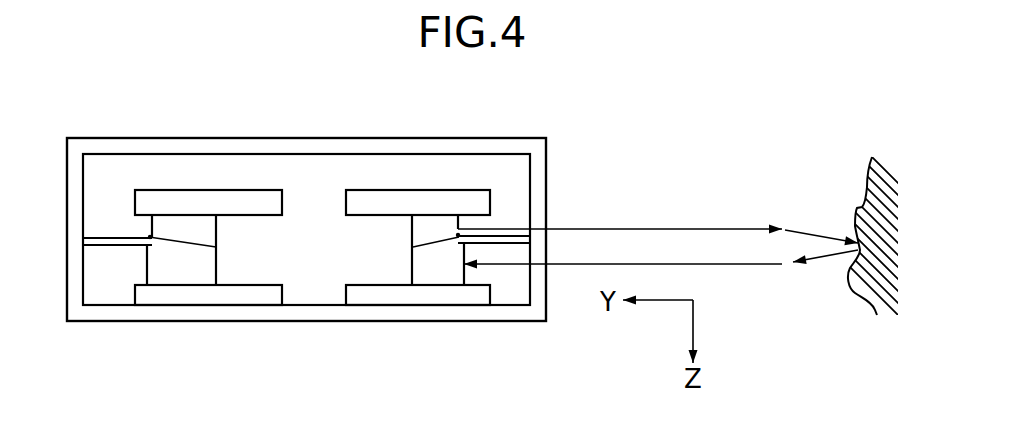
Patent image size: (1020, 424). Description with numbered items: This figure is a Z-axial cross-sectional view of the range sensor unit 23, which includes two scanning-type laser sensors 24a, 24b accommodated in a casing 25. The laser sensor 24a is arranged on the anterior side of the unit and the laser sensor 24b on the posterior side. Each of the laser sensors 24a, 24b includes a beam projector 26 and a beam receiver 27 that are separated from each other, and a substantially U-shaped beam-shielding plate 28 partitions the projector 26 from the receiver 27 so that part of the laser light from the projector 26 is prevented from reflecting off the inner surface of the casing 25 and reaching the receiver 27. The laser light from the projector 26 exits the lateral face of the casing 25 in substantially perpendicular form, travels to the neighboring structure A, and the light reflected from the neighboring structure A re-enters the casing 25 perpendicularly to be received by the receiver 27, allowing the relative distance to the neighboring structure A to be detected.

The range sensor unit 23 is at (557, 158).
The laser sensor 24a is at (198, 190).
The laser sensor 24b is at (412, 190).
The casing 25 is at (313, 147).
The beam projector 26 is at (163, 230).
The beam receiver 27 is at (200, 270).
The beam-shielding plate 28 is at (103, 243).
The neighboring structure A is at (866, 189).